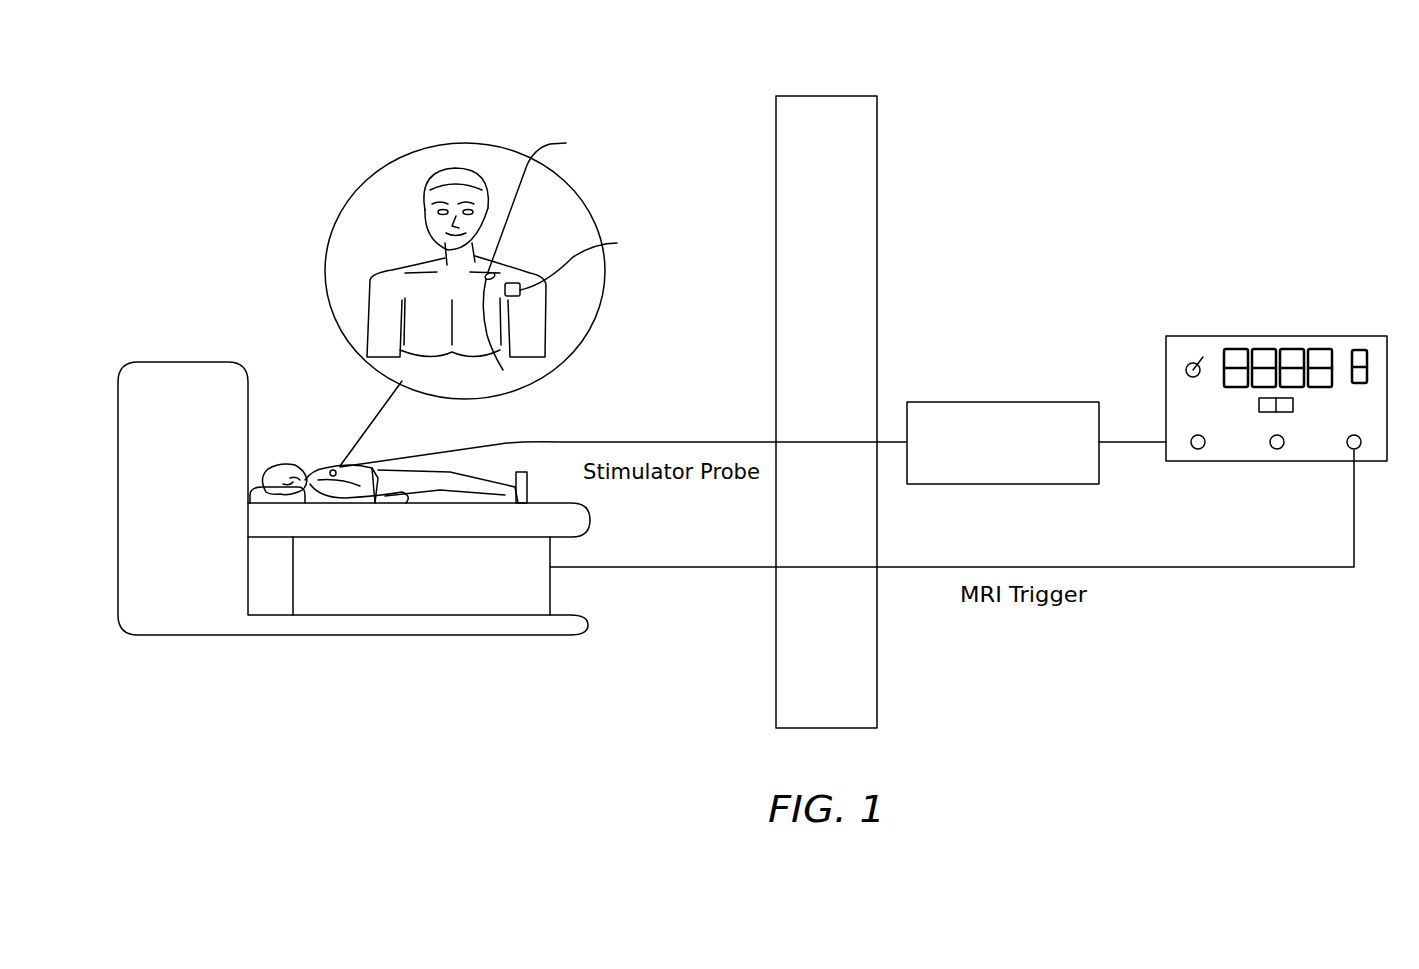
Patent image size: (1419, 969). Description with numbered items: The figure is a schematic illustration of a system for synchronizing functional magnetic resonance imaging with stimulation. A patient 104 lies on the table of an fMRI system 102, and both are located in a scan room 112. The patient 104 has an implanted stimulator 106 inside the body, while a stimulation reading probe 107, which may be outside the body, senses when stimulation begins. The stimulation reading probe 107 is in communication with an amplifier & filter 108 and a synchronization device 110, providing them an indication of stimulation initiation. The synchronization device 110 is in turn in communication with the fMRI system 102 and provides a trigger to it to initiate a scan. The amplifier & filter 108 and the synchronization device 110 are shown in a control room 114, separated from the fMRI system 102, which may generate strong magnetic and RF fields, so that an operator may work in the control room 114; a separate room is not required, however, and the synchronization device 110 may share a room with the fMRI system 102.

The fMRI system 102 is at (187, 635).
The patient 104 is at (470, 505).
The implanted stimulator 106 is at (665, 263).
The stimulation reading probe 107 is at (620, 108).
The amplifier & filter 108 is at (1002, 402).
The synchronization device 110 is at (1243, 343).
The scan room 112 is at (452, 73).
The control room 114 is at (1055, 73).